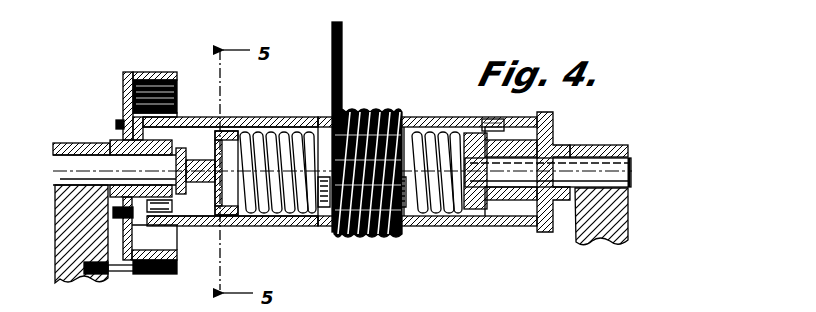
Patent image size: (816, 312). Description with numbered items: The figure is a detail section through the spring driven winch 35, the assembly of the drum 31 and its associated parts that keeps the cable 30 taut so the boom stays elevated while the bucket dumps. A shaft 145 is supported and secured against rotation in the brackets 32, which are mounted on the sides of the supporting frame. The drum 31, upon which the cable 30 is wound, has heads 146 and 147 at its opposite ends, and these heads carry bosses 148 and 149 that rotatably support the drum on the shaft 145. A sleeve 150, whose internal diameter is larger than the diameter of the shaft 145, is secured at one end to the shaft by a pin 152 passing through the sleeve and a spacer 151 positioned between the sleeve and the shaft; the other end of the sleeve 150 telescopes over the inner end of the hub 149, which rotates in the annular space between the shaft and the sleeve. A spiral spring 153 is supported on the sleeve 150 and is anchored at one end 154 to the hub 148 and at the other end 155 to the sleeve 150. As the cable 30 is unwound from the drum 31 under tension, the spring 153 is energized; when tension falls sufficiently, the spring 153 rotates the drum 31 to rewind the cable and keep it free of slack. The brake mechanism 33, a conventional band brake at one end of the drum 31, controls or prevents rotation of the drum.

The cable 30 is at (344, 52).
The drum 31 is at (488, 117).
The brackets 32 is at (55, 199).
The brake mechanism 33 is at (141, 72).
The spring driven winch 35 is at (400, 107).
The shaft 145 is at (632, 173).
The head 146 is at (118, 141).
The head 147 is at (556, 129).
The boss 148 is at (195, 108).
The boss 149 is at (527, 201).
The sleeve 150 is at (490, 200).
The spacer 151 is at (213, 205).
The pin 152 is at (231, 122).
The spiral spring 153 is at (421, 120).
The spring end 154 is at (124, 103).
The spring end 155 is at (125, 72).